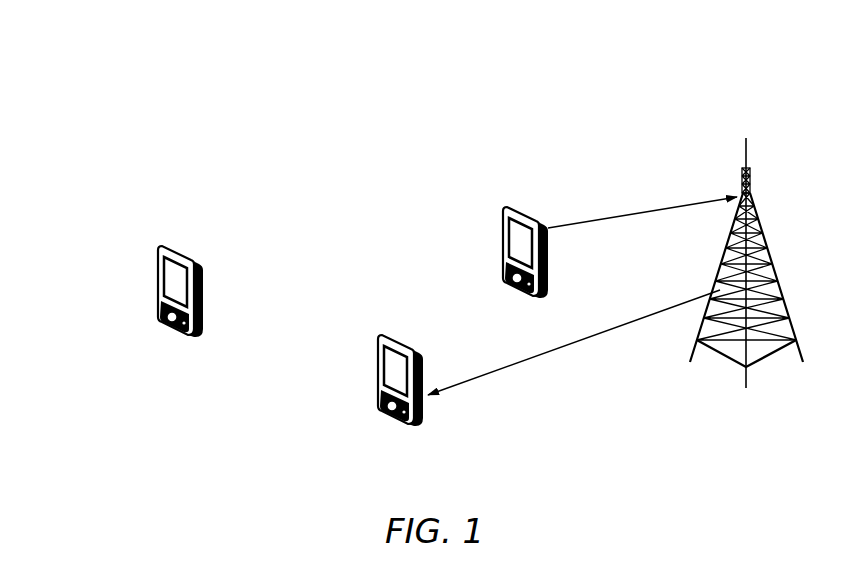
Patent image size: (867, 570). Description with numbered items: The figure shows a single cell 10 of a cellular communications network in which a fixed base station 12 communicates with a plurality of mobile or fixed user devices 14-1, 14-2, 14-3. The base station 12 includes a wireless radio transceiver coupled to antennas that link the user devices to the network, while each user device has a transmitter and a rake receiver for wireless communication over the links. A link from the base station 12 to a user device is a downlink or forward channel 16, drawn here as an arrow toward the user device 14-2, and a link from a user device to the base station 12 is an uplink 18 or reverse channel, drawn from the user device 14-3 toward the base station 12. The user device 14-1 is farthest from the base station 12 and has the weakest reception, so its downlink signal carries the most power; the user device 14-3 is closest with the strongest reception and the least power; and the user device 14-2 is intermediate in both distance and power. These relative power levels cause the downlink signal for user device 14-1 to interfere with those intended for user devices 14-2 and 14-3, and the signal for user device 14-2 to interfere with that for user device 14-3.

The cell 10 is at (93, 105).
The base station 12 is at (781, 300).
The user device 14-1 is at (167, 245).
The user device 14-2 is at (384, 335).
The user device 14-3 is at (513, 206).
The downlink 16 is at (593, 340).
The uplink 18 is at (615, 215).